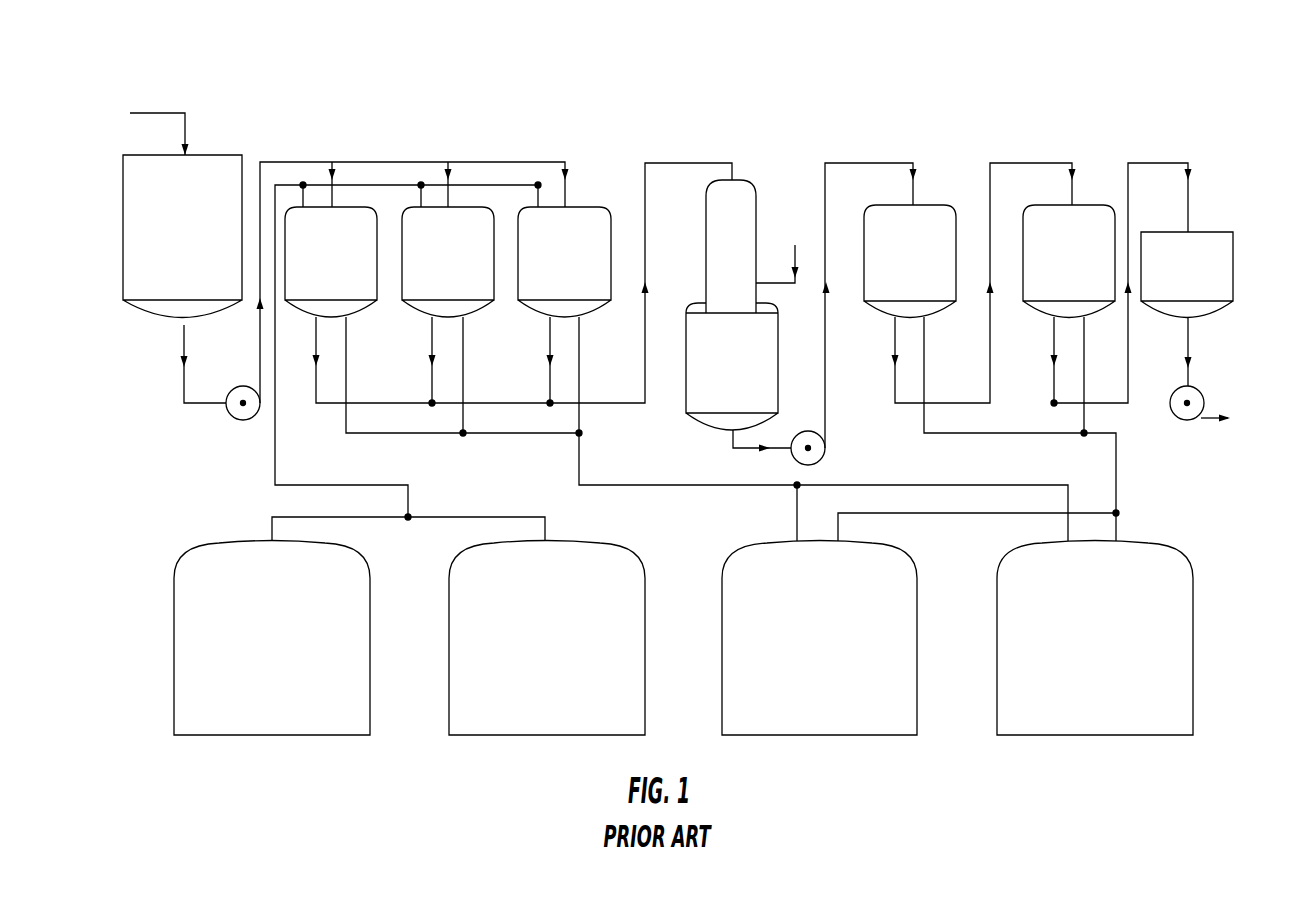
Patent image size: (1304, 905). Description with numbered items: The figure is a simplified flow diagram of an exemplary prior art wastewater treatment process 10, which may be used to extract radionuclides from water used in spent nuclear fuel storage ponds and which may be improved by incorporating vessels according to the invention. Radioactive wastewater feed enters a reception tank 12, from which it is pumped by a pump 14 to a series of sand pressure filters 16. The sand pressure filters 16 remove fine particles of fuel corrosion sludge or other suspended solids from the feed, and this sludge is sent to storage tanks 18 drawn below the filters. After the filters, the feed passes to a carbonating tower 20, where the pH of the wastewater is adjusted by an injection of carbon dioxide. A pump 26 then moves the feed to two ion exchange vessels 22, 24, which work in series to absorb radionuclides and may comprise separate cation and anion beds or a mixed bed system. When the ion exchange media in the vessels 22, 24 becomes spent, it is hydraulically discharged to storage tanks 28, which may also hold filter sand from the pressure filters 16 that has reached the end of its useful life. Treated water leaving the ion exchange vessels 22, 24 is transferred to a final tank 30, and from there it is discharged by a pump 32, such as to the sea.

The wastewater treatment process 10 is at (580, 92).
The reception tank 12 is at (203, 170).
The pump 14 is at (228, 415).
The sand pressure filters 16 is at (340, 225).
The storage tanks 18 is at (323, 720).
The carbonating tower 20 is at (728, 337).
The ion exchange vessel 22 is at (913, 260).
The ion exchange vessel 24 is at (1087, 243).
The pump 26 is at (820, 467).
The storage tanks 28 is at (867, 727).
The final tank 30 is at (1208, 260).
The pump 32 is at (1183, 415).